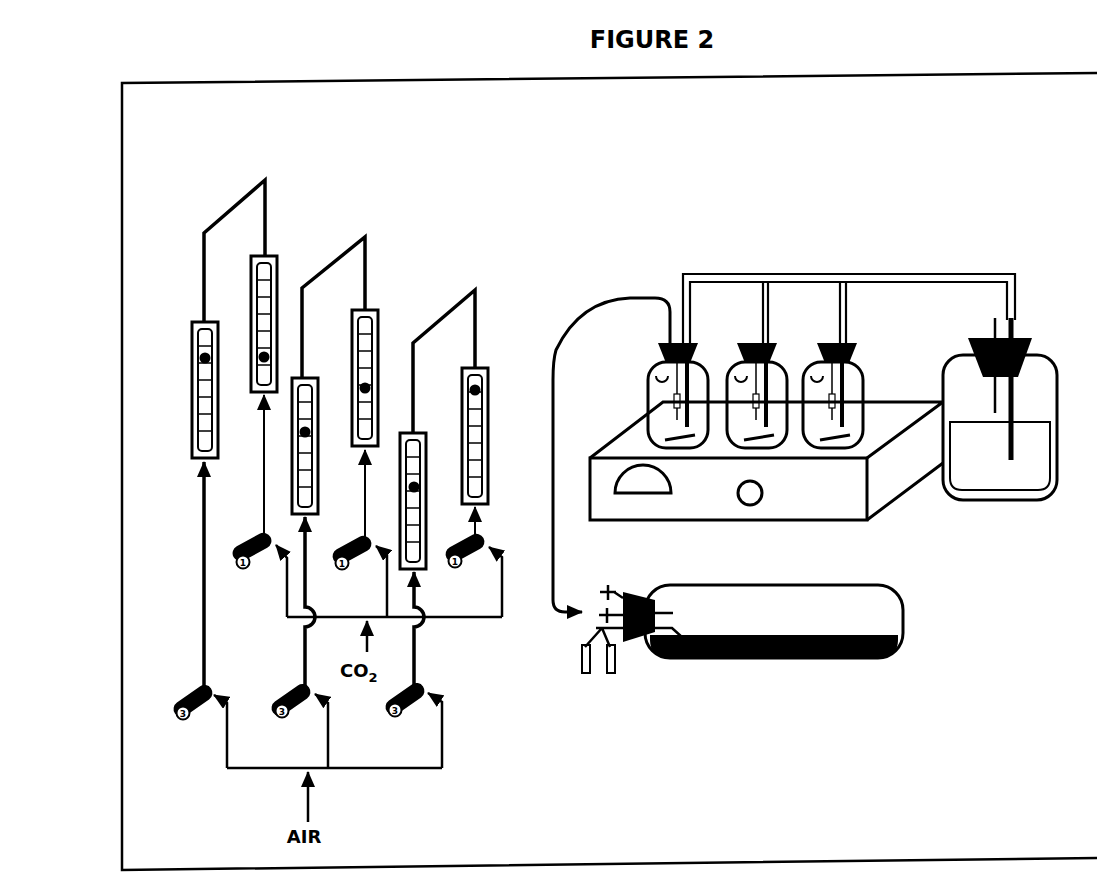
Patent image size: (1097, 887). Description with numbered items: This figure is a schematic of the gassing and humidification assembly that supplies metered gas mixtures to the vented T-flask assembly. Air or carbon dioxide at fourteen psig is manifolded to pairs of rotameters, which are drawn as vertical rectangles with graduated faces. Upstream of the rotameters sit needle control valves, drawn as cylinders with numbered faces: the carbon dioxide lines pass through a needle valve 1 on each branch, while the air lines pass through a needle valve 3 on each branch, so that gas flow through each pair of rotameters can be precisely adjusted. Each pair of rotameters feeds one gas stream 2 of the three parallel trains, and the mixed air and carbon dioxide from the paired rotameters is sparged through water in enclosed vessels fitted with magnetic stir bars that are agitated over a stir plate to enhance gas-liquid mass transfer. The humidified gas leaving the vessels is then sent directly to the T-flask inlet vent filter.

The needle control valve 1 is at (834, 342).
The culture stream #2 (flowmeters and gas line) 2 is at (756, 342).
The needle control valve 3 is at (676, 342).